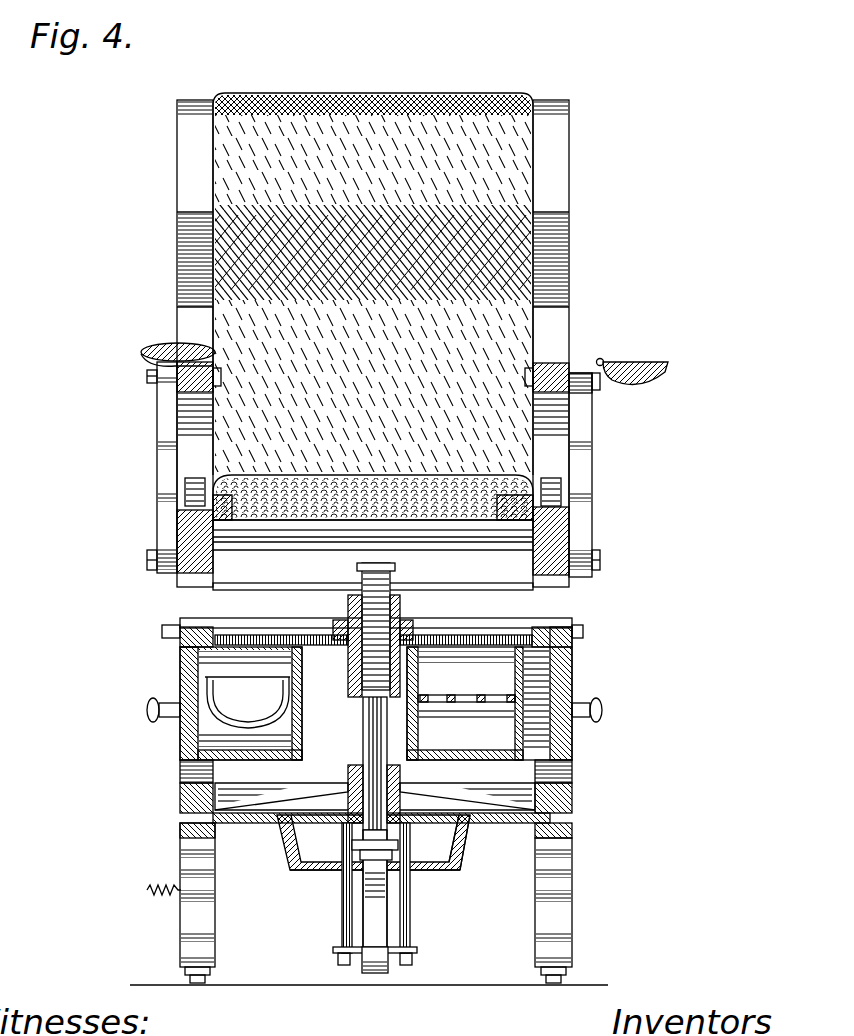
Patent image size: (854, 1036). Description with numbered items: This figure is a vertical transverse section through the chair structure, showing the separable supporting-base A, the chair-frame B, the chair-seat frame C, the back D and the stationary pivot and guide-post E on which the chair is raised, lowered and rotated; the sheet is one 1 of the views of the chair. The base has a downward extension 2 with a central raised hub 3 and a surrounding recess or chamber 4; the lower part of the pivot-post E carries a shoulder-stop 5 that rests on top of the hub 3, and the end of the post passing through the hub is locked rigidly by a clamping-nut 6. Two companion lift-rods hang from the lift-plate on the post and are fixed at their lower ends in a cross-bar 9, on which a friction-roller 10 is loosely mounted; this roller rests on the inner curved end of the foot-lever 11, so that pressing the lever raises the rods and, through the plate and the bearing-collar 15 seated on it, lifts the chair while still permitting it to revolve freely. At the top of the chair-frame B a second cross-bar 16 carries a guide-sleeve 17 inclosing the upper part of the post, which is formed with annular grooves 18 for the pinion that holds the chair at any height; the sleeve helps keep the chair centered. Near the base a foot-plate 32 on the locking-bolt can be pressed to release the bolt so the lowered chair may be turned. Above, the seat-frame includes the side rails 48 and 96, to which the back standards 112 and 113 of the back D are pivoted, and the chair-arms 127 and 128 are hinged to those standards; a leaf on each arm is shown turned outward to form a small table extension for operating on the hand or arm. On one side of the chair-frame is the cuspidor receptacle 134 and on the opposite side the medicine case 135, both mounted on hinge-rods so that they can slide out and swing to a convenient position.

The back standard 112 is at (164, 343).
The back standard 113 is at (573, 343).
The chair-arm 127 is at (152, 353).
The chair-arm 128 is at (583, 395).
The side-rail 48 is at (200, 532).
The side-rail 96 is at (560, 545).
The chair-seat frame C is at (131, 566).
The back D is at (373, 341).
The chair-frame B is at (355, 640).
The annular grooves 18 is at (370, 622).
The cross-bar 16 is at (296, 627).
The guide-sleeve 17 is at (356, 683).
The cuspidor receptacle 134 is at (241, 703).
The medicine case 135 is at (489, 693).
The pivot and guide-post E is at (376, 732).
The bearing-collar 15 is at (352, 790).
The hopper 1 is at (373, 842).
The downward extension 2 is at (458, 866).
The central raised hub 3 is at (430, 851).
The recess or chamber 4 is at (322, 866).
The shoulder-stop 5 is at (440, 826).
The clamping-nut 6 is at (388, 858).
The cross-bar 9 is at (336, 951).
The friction-roller 10 is at (375, 953).
The foot-lever 11 is at (372, 918).
The foot-plate 32 is at (147, 891).